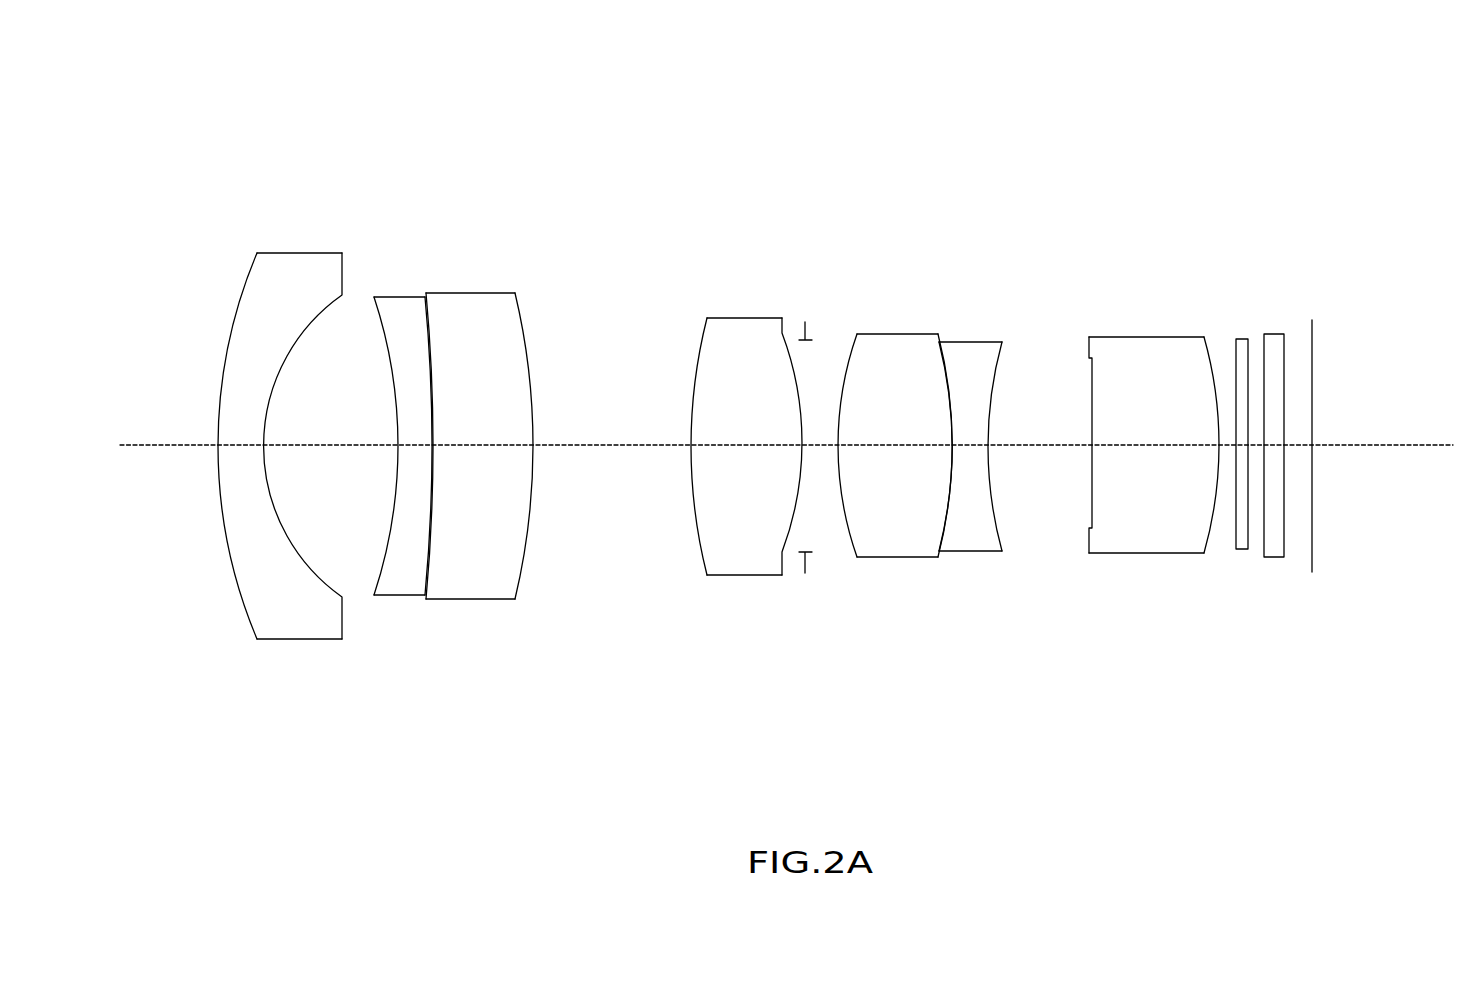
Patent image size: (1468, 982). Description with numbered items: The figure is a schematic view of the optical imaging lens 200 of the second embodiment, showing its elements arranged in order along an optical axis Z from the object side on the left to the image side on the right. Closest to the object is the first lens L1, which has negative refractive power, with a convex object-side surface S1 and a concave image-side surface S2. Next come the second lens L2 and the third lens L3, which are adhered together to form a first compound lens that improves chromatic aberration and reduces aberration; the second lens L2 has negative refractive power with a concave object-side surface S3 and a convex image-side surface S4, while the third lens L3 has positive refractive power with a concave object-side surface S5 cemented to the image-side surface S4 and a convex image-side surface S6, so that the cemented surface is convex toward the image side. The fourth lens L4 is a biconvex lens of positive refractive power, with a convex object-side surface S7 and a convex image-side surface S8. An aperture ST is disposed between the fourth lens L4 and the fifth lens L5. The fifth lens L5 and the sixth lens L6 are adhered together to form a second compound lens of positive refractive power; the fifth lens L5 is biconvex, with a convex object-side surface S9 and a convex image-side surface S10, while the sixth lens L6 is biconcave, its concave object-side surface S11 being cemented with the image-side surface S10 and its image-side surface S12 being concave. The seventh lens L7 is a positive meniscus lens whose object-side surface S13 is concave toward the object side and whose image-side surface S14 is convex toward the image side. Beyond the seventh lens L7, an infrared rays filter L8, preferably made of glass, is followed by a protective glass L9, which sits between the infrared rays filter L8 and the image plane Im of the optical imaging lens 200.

The optical imaging lens 200 is at (198, 121).
The optical axis Z is at (767, 446).
The first lens L1 is at (250, 302).
The second lens L2 is at (398, 340).
The third lens L3 is at (472, 327).
The fourth lens L4 is at (743, 323).
The aperture ST is at (806, 323).
The fifth lens L5 is at (898, 352).
The sixth lens L6 is at (967, 350).
The seventh lens L7 is at (1139, 358).
The infrared rays filter L8 is at (1242, 353).
The protective glass L9 is at (1275, 345).
The image plane Im is at (1312, 373).
The object-side surface of the first lens S1 is at (240, 592).
The image-side surface of the first lens S2 is at (342, 623).
The object-side surface of the second lens S3 is at (375, 583).
The image-side surface of the second lens S4 is at (425, 597).
The object-side surface of the third lens S5 is at (428, 563).
The image-side surface of the third lens S6 is at (522, 573).
The object-side surface of the fourth lens S7 is at (700, 545).
The image-side surface of the fourth lens S8 is at (782, 553).
The object-side surface of the fifth lens S9 is at (853, 543).
The image-side surface of the fifth lens S10 is at (942, 540).
The object-side surface of the sixth lens S11 is at (947, 518).
The image-side surface of the sixth lens S12 is at (995, 527).
The object-side surface of the seventh lens S13 is at (1092, 512).
The image-side surface of the seventh lens S14 is at (1205, 537).